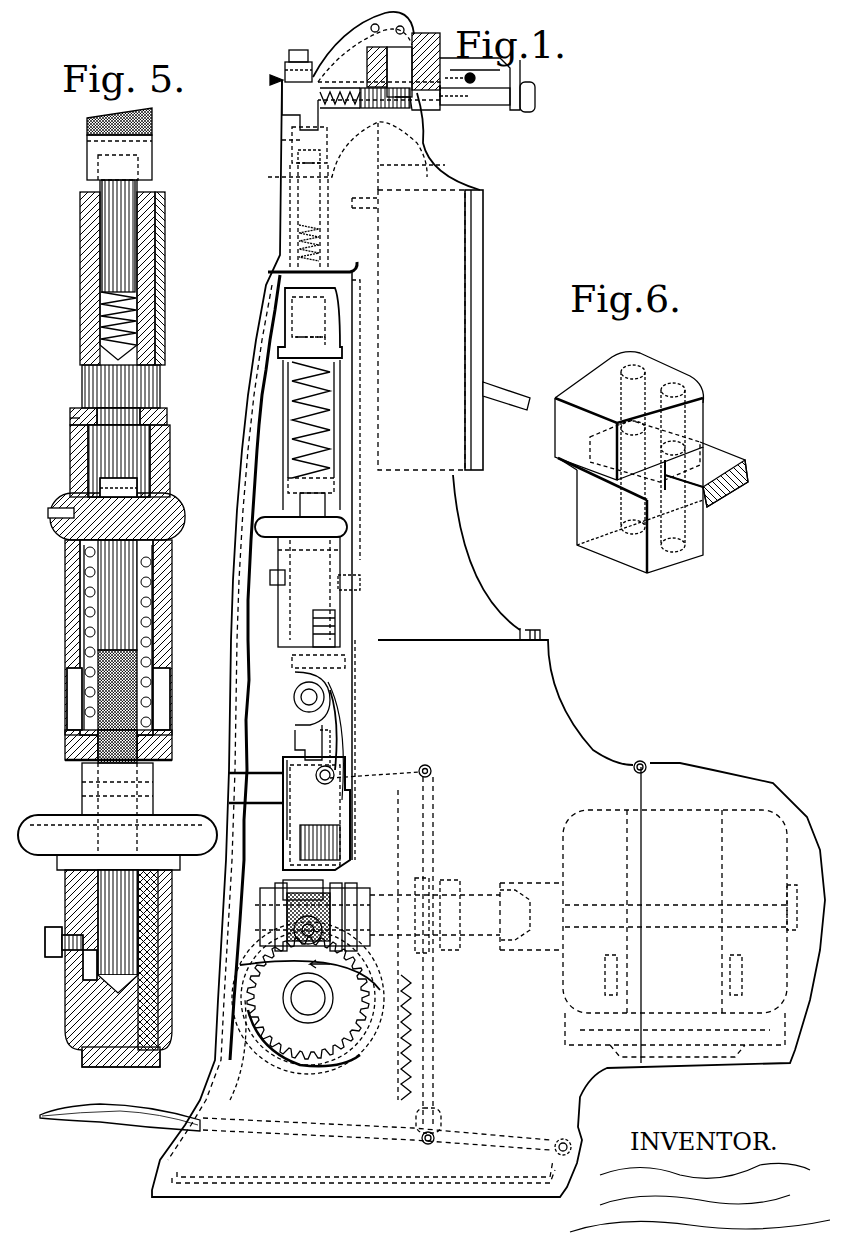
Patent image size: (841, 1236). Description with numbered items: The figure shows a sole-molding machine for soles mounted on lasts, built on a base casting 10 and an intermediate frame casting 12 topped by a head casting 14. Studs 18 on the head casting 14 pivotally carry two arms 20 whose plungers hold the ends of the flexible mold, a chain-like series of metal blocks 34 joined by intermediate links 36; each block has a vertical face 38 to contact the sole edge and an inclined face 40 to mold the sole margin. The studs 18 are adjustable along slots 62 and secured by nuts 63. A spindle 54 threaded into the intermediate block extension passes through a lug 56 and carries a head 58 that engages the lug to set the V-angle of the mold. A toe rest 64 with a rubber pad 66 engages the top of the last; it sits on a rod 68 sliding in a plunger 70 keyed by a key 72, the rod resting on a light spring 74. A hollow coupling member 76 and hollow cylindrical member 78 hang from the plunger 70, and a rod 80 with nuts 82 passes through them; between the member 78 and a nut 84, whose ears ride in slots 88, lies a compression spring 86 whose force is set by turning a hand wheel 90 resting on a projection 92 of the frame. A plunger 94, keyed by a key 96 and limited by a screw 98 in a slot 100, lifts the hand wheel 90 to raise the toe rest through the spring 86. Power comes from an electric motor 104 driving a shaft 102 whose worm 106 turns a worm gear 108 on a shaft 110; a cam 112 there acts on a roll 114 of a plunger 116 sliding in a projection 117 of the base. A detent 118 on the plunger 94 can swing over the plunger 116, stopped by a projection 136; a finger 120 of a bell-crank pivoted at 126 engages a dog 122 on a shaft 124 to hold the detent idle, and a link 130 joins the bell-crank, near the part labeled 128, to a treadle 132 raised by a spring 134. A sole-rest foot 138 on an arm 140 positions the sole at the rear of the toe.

In FIG. 1, the base casting 10 is at (555, 695).
In FIG. 1, the intermediate frame casting 12 is at (462, 542).
In FIG. 1, the head casting 14 is at (338, 73).
In FIG. 1, the studs 18 is at (380, 30).
In FIG. 1, the arms 20 is at (405, 110).
In FIG. 6, the metal blocks 34 is at (610, 372).
In FIG. 6, the intermediate links 36 is at (720, 450).
In FIG. 6, the vertical face 38 is at (590, 515).
In FIG. 6, the inclined face 40 is at (575, 466).
In FIG. 1, the spindle 54 is at (480, 105).
In FIG. 1, the lug 56 is at (520, 72).
In FIG. 1, the head 58 is at (535, 100).
In FIG. 1, the slots 62 is at (362, 108).
In FIG. 1, the nuts 63 is at (426, 38).
In FIG. 5, the toe rest 64 is at (148, 162).
In FIG. 1, the toe rest 64 is at (292, 147).
In FIG. 5, the rubber pad 66 is at (152, 125).
In FIG. 5, the rod 68 is at (135, 233).
In FIG. 5, the plunger 70 is at (82, 268).
In FIG. 5, the key 72 is at (165, 282).
In FIG. 5, the spring 74 is at (130, 322).
In FIG. 5, the hollow coupling member 76 is at (165, 445).
In FIG. 1, the hollow coupling member 76 is at (330, 320).
In FIG. 5, the hollow cylindrical member 78 is at (172, 590).
In FIG. 1, the hollow cylindrical member 78 is at (330, 412).
In FIG. 5, the rod 80 is at (172, 557).
In FIG. 5, the nuts 82 is at (140, 490).
In FIG. 5, the nut 84 is at (160, 737).
In FIG. 5, the compression spring 86 is at (150, 622).
In FIG. 5, the slots 88 is at (72, 688).
In FIG. 5, the hand wheel 90 is at (182, 815).
In FIG. 1, the hand wheel 90 is at (338, 527).
In FIG. 5, the projection 92 is at (70, 1020).
In FIG. 1, the projection 92 is at (285, 618).
In FIG. 5, the plunger 94 is at (82, 1055).
In FIG. 1, the plunger 94 is at (300, 660).
In FIG. 5, the key 96 is at (150, 1003).
In FIG. 5, the screw 98 is at (52, 927).
In FIG. 5, the slot 100 is at (86, 968).
In FIG. 1, the shaft 102 is at (480, 948).
In FIG. 1, the electric motor 104 is at (585, 828).
In FIG. 1, the worm 106 is at (287, 918).
In FIG. 1, the worm gear 108 is at (258, 985).
In FIG. 1, the shaft 110 is at (318, 1000).
In FIG. 1, the cam 112 is at (355, 1038).
In FIG. 1, the roll 114 is at (290, 940).
In FIG. 1, the plunger 116 is at (300, 878).
In FIG. 1, the projection 117 is at (232, 775).
In FIG. 1, the detent 118 is at (345, 720).
In FIG. 1, the finger 120 is at (338, 745).
In FIG. 1, the dog 122 is at (335, 695).
In FIG. 1, the shaft 124 is at (300, 697).
In FIG. 1, the pivot 126 is at (290, 764).
In FIG. 1, the pin 128 is at (432, 780).
In FIG. 1, the link 130 is at (436, 1083).
In FIG. 5, the treadle 132 is at (178, 1115).
In FIG. 1, the spring 134 is at (400, 1105).
In FIG. 1, the projection 136 is at (298, 742).
In FIG. 1, the sole-rest foot 138 is at (270, 80).
In FIG. 1, the arm 140 is at (312, 45).